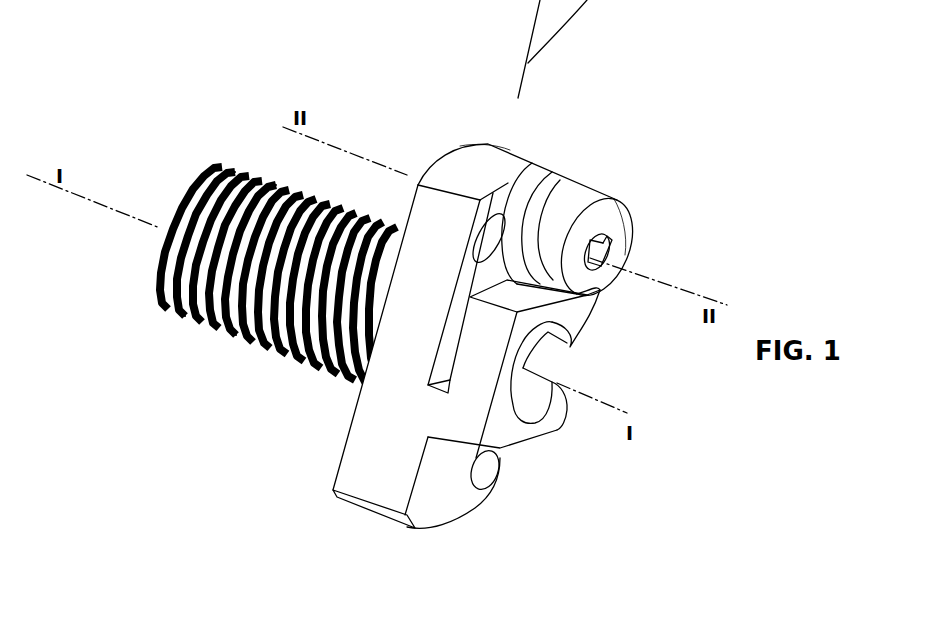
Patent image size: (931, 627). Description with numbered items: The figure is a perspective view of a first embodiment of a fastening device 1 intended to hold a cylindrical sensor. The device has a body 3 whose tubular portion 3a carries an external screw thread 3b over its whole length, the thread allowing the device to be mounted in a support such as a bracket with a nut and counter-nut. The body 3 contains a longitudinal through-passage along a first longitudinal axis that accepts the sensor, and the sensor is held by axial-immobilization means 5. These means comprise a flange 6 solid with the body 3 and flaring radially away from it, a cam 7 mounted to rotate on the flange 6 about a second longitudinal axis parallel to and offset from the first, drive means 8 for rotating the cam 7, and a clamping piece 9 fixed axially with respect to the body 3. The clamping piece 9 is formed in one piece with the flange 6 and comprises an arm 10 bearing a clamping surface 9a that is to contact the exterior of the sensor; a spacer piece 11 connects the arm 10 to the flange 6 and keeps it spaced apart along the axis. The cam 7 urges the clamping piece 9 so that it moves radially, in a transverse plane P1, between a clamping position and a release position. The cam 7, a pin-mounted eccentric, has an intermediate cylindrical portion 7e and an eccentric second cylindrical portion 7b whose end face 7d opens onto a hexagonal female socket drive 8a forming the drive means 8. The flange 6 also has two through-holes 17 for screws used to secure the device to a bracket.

The fastening device 1 is at (354, 122).
The body 3 is at (306, 390).
The tubular portion 3a is at (246, 352).
The external screw thread 3b is at (197, 316).
The axial-immobilization means 5 is at (657, 174).
The flange 6 is at (500, 145).
The cam 7 is at (604, 184).
The second cylindrical portion 7b is at (575, 186).
The end face 7d is at (616, 220).
The intermediate cylindrical portion 7e is at (558, 190).
The drive means 8 is at (603, 268).
The female socket drive 8a is at (618, 252).
The clamping piece 9 is at (612, 322).
The clamping surface 9a is at (548, 332).
The arm 10 is at (492, 314).
The spacer piece 11 is at (428, 407).
The through-holes 17 is at (489, 232).
The transverse plane P1 is at (574, 24).